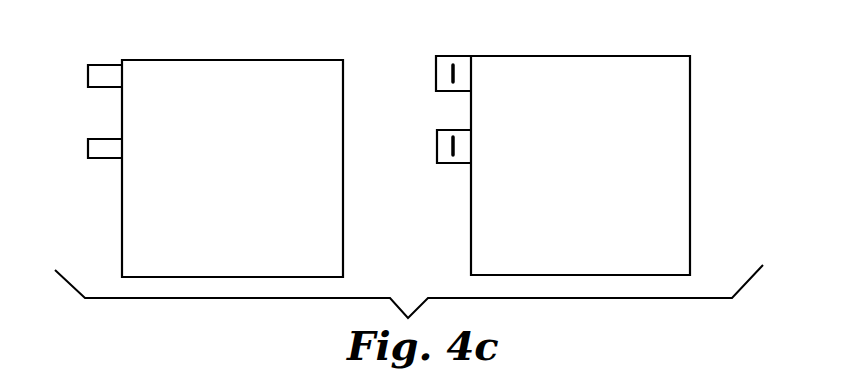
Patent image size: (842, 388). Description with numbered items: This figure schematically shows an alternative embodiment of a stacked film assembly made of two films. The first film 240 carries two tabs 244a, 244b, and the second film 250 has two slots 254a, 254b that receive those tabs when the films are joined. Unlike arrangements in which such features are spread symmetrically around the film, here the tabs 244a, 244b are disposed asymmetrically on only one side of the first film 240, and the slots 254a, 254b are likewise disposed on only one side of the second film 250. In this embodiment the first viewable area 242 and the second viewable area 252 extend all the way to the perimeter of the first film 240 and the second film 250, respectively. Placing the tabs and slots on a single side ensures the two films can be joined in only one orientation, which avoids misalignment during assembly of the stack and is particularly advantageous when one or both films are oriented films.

The first film 240 is at (203, 43).
The first viewable area 242 is at (122, 73).
The tab 244a is at (68, 65).
The tab 244b is at (97, 139).
The second film 250 is at (552, 45).
The second viewable area 252 is at (471, 70).
The slot 254a is at (453, 58).
The slot 254b is at (451, 160).